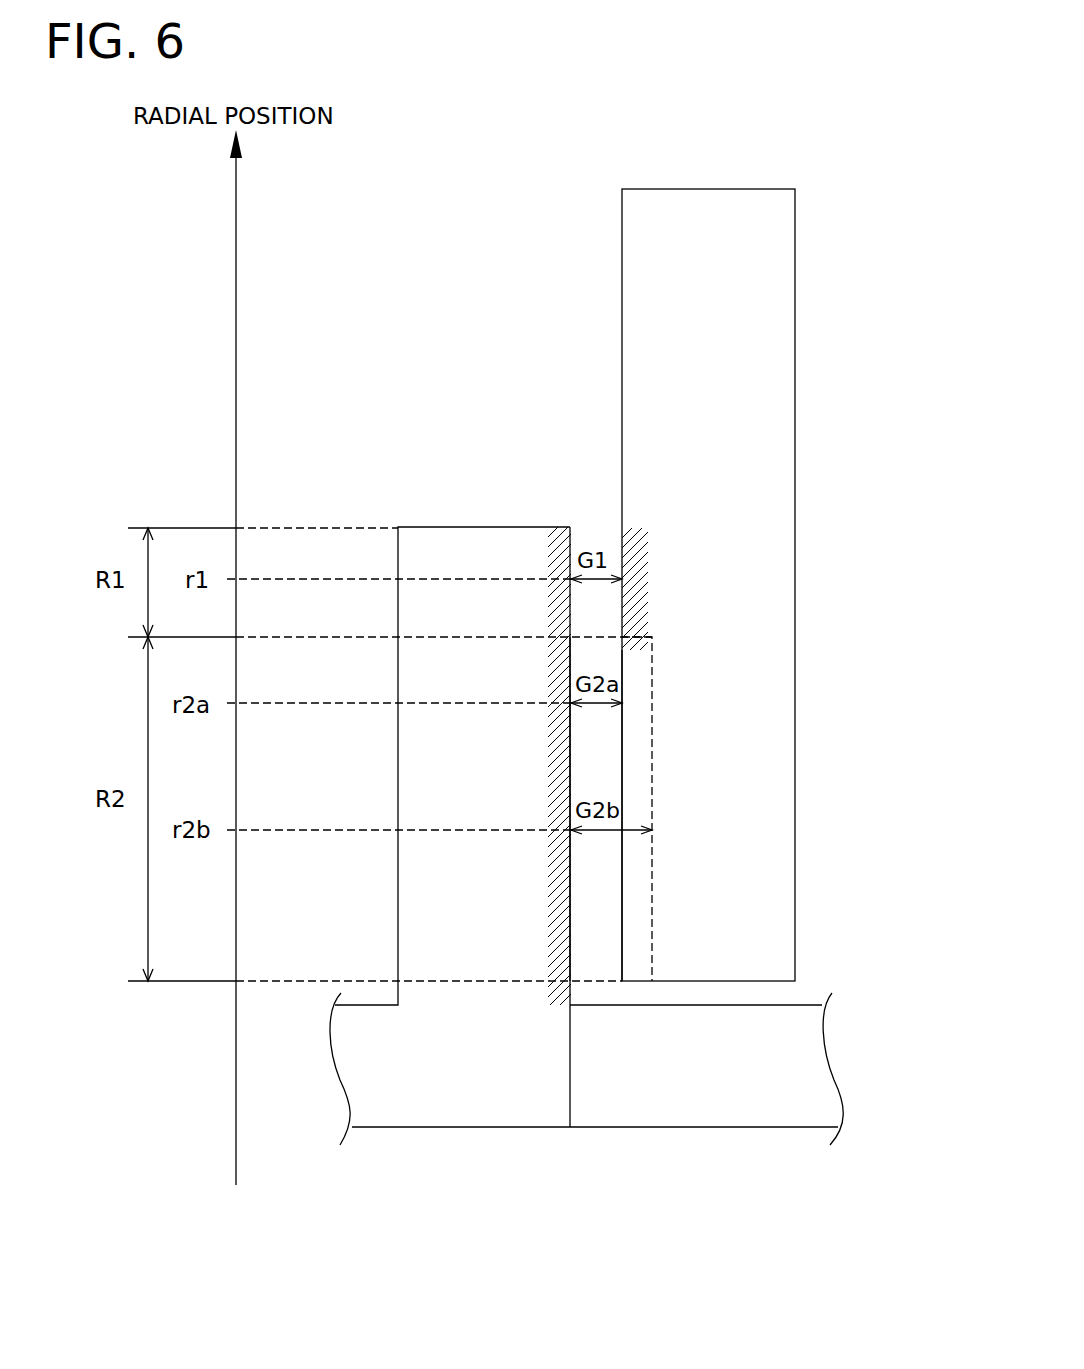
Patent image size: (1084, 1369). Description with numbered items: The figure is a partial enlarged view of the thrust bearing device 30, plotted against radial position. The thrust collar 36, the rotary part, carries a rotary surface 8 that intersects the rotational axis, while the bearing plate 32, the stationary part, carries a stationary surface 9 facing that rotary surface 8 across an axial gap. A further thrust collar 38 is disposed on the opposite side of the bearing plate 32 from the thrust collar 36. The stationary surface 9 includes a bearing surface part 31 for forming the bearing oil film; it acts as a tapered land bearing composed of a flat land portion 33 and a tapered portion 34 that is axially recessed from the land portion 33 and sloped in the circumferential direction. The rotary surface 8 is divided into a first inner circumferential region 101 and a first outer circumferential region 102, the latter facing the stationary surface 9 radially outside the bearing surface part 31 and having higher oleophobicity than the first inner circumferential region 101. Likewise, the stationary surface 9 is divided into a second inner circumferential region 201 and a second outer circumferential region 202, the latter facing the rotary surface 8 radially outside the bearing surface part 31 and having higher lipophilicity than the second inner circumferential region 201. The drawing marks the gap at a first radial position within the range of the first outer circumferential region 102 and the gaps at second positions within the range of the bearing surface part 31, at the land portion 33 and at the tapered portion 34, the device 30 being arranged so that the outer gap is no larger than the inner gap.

The thrust bearing device 30 is at (850, 172).
The bearing plate 32 is at (714, 200).
The thrust collar 36 is at (432, 540).
The thrust collar 38 is at (798, 1033).
The rotary surface 8 is at (570, 627).
The stationary surface 9 is at (622, 666).
The land portion 33 is at (622, 745).
The tapered portion 34 is at (652, 775).
The bearing surface part 31 is at (845, 678).
The second inner circumferential region 201 is at (787, 809).
The first inner circumferential region 101 is at (571, 935).
The first outer circumferential region 102 is at (582, 538).
The second outer circumferential region 202 is at (612, 546).